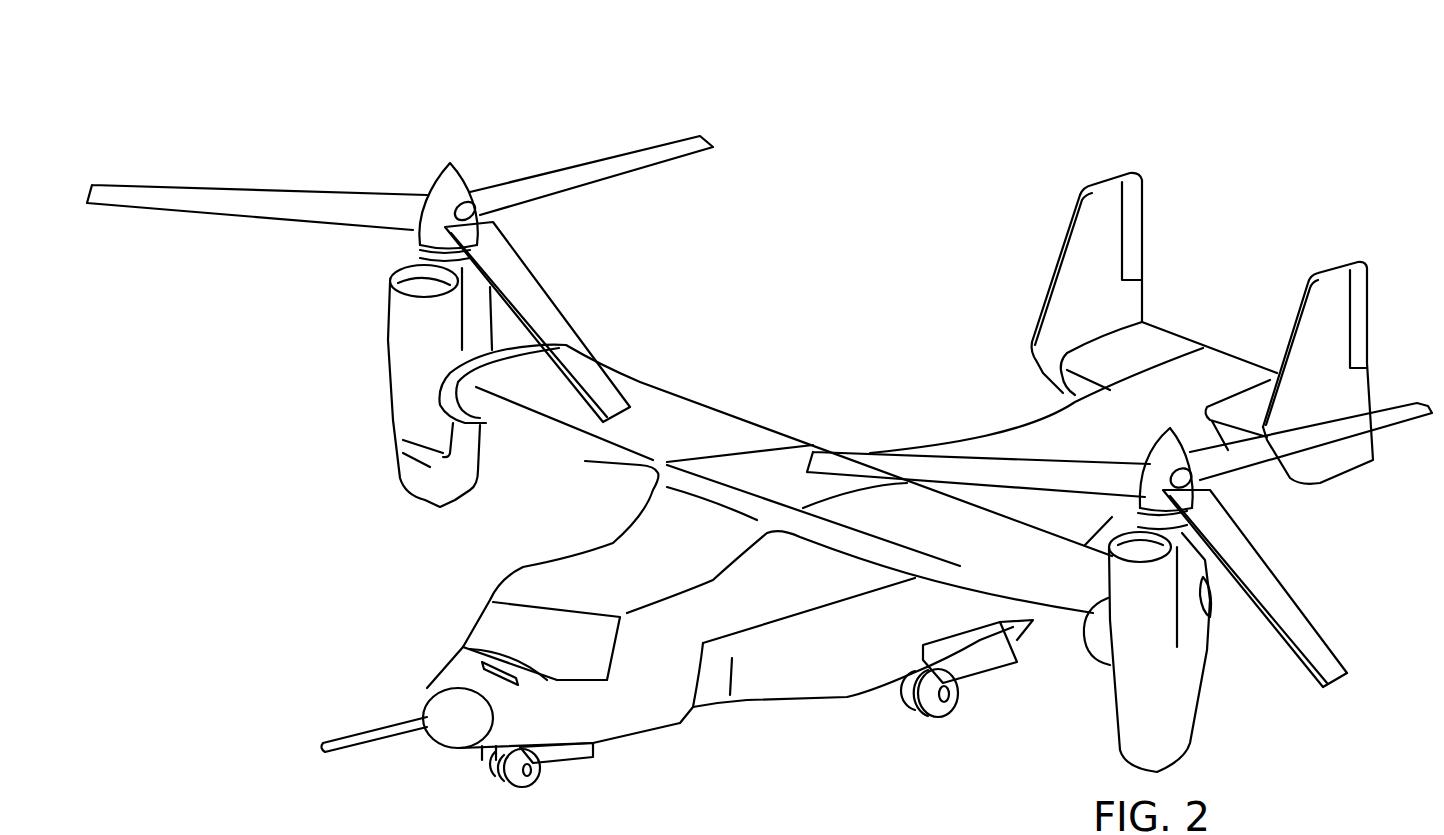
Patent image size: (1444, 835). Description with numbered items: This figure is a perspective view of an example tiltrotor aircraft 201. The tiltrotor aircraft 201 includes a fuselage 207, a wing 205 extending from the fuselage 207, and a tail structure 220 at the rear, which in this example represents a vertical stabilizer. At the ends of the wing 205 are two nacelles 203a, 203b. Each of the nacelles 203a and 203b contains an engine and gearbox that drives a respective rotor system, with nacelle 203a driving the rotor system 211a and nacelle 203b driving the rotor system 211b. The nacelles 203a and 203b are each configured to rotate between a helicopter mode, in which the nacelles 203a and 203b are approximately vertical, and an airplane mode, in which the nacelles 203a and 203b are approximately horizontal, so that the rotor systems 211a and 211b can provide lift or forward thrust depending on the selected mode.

The tiltrotor aircraft 201 is at (642, 86).
The nacelle 203a is at (1205, 678).
The nacelle 203b is at (388, 387).
The wing 205 is at (701, 404).
The fuselage 207 is at (653, 732).
The rotor system 211a is at (1152, 456).
The rotor system 211b is at (445, 190).
The tail structure 220 is at (1177, 333).